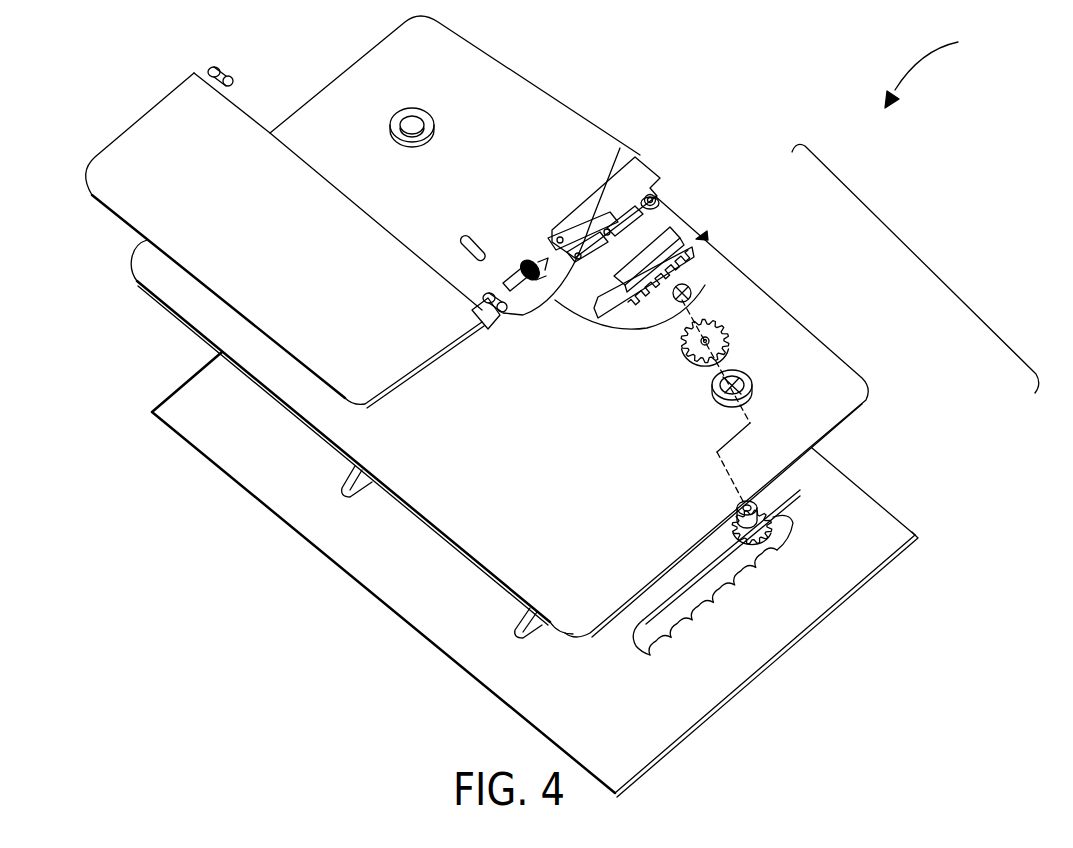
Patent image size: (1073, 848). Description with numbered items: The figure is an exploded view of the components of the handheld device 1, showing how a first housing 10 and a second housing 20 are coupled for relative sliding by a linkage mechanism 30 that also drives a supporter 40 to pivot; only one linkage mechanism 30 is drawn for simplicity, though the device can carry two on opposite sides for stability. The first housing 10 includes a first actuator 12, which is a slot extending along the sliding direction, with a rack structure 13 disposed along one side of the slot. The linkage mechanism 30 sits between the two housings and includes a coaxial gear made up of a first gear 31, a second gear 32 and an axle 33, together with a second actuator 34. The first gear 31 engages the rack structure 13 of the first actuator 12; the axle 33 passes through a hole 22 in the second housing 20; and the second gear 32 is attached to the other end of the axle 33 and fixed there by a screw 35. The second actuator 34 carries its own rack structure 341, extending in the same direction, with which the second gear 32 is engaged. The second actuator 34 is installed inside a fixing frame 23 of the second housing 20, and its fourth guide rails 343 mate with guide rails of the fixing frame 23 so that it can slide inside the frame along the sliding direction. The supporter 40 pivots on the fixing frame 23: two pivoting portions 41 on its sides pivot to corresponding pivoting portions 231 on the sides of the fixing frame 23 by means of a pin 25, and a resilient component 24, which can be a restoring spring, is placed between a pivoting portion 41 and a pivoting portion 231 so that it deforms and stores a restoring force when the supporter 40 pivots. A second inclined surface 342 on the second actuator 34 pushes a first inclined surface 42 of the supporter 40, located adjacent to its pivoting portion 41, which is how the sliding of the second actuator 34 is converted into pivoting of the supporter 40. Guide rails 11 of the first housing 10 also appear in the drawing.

The handheld device 1 is at (928, 69).
The first housing 10 is at (423, 620).
The guide rail 11 is at (329, 494).
The first actuator 12 is at (677, 613).
The rack structure 13 is at (769, 578).
The second housing 20 is at (163, 288).
The hole 22 is at (416, 110).
The fixing frame 23 is at (624, 175).
The pivoting portion 231 is at (604, 205).
The resilient component 24 is at (548, 250).
The pin 25 is at (475, 235).
The linkage mechanism 30 is at (922, 254).
The first gear 31 is at (752, 500).
The second gear 32 is at (722, 317).
The axle 33 is at (815, 450).
The second actuator 34 is at (702, 240).
The rack structure 341 is at (686, 268).
The second inclined surface 342 is at (690, 308).
The fourth guide rails 343 is at (670, 229).
The screw 35 is at (710, 282).
The supporter 40 is at (138, 142).
The pivoting portion 41 is at (228, 70).
The first inclined surface 42 is at (657, 199).